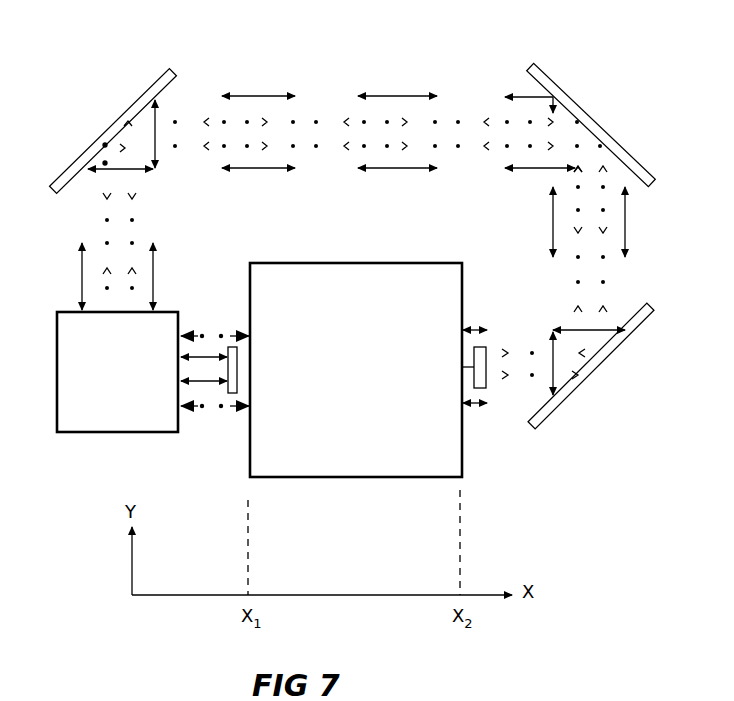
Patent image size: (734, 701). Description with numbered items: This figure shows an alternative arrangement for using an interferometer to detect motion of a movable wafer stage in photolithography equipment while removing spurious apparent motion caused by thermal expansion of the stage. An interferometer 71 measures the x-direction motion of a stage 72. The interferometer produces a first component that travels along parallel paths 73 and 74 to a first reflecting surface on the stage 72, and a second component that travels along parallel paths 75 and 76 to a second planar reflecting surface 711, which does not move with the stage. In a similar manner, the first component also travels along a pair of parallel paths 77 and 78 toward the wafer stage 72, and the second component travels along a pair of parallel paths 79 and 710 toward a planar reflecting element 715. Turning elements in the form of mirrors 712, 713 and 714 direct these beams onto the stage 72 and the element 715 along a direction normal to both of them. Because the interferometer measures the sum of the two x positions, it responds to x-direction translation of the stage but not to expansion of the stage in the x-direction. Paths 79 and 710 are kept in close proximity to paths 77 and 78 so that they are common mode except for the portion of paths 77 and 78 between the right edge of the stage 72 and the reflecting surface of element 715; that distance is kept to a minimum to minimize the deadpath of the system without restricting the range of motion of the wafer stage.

The interferometer 71 is at (77, 434).
The stage 72 is at (249, 468).
The parallel path 73 is at (232, 410).
The parallel path 74 is at (234, 328).
The parallel path 75 is at (199, 385).
The parallel path 76 is at (212, 352).
The parallel path 77 is at (80, 280).
The parallel path 78 is at (157, 280).
The parallel path 79 is at (98, 219).
The parallel path 710 is at (138, 221).
The second planar reflecting surface 711 is at (238, 362).
The mirror 712 is at (137, 100).
The mirror 713 is at (577, 108).
The mirror 714 is at (647, 318).
The planar reflecting element 715 is at (472, 365).